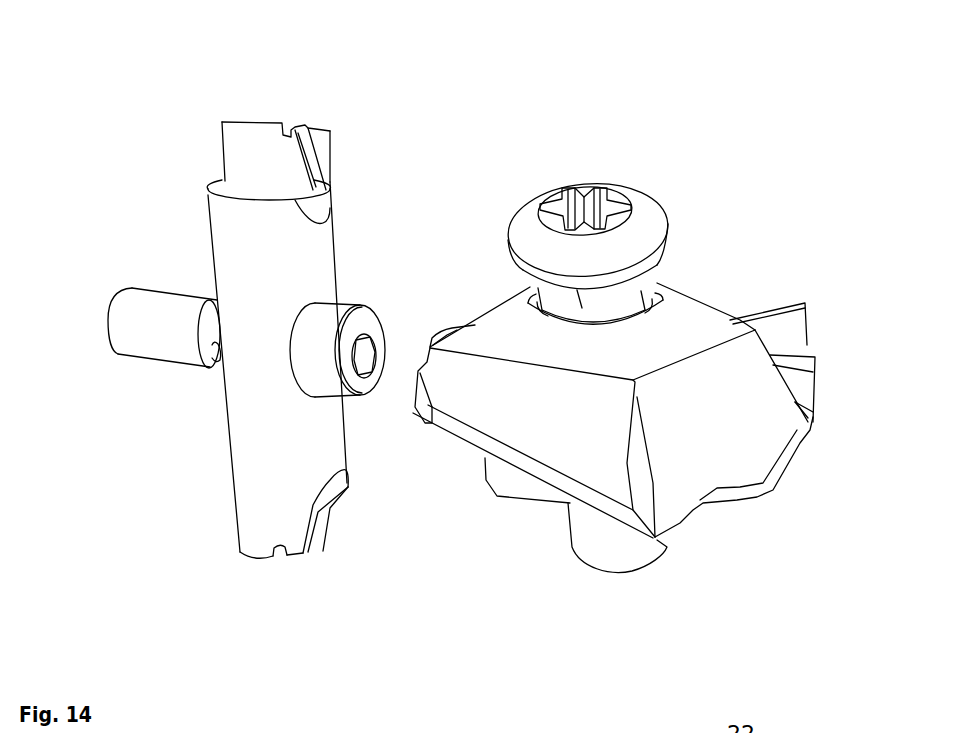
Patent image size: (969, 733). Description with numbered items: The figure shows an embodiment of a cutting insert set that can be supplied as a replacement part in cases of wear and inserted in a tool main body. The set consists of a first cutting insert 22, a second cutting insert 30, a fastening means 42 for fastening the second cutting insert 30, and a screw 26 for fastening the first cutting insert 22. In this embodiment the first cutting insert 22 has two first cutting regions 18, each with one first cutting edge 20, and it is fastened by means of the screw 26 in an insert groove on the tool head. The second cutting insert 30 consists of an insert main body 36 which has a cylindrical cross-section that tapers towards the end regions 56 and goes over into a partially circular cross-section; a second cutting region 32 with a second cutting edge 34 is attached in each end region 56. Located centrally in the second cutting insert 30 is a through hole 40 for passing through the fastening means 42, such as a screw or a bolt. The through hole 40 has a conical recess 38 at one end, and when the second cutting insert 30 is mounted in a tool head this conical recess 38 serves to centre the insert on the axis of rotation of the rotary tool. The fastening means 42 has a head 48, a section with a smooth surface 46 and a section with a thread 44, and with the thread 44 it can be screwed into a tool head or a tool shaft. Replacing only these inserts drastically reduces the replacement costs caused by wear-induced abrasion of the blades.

The first cutting region 18 is at (798, 445).
The first cutting edge 20 is at (815, 374).
The first cutting insert 22 is at (661, 342).
The screw 26 is at (600, 545).
The second cutting insert 30 is at (269, 302).
The second cutting region 32 is at (356, 350).
The second cutting edge 34 is at (317, 160).
The insert main body 36 is at (320, 253).
The conical recess 38 is at (293, 365).
The through hole 40 is at (354, 366).
The fastening means 42 is at (164, 330).
The thread 44 is at (134, 345).
The smooth surface 46 is at (216, 348).
The head 48 is at (373, 327).
The end region 56 is at (214, 170).